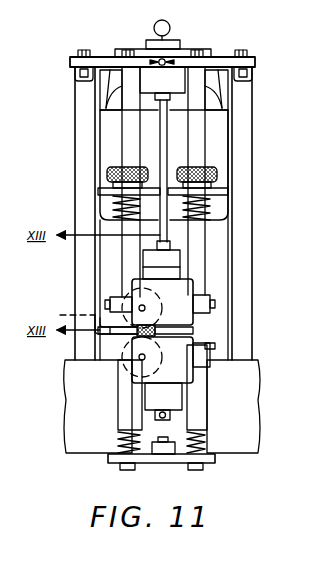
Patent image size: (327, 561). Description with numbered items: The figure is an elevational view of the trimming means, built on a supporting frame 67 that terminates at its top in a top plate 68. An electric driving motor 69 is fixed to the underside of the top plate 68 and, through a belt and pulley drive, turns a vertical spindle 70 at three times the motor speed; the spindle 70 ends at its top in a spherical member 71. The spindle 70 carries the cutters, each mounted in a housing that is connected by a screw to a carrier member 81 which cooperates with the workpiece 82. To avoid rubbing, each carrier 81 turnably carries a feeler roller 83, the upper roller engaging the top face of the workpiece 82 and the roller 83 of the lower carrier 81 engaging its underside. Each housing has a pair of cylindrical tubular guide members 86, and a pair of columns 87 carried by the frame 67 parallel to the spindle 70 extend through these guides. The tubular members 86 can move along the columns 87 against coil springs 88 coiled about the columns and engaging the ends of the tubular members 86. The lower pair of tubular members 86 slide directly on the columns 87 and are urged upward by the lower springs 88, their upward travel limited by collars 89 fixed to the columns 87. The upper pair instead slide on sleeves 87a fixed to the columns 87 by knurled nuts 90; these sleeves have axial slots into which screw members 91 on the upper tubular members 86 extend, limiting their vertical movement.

The supporting frame 67 is at (243, 192).
The top plate 68 is at (256, 62).
The electric driving motor 69 is at (232, 111).
The vertical spindle 70 is at (168, 140).
The spherical member 71 is at (170, 26).
The carrier member 81 is at (185, 291).
The workpiece 82 is at (80, 315).
The feeler roller 83 is at (125, 300).
The tubular guide member 86 is at (181, 262).
The column 87 is at (218, 160).
The sleeve 87a is at (105, 192).
The coil spring 88 is at (212, 216).
The collar 89 is at (215, 348).
The nut 90 is at (240, 176).
The screw member 91 is at (216, 303).